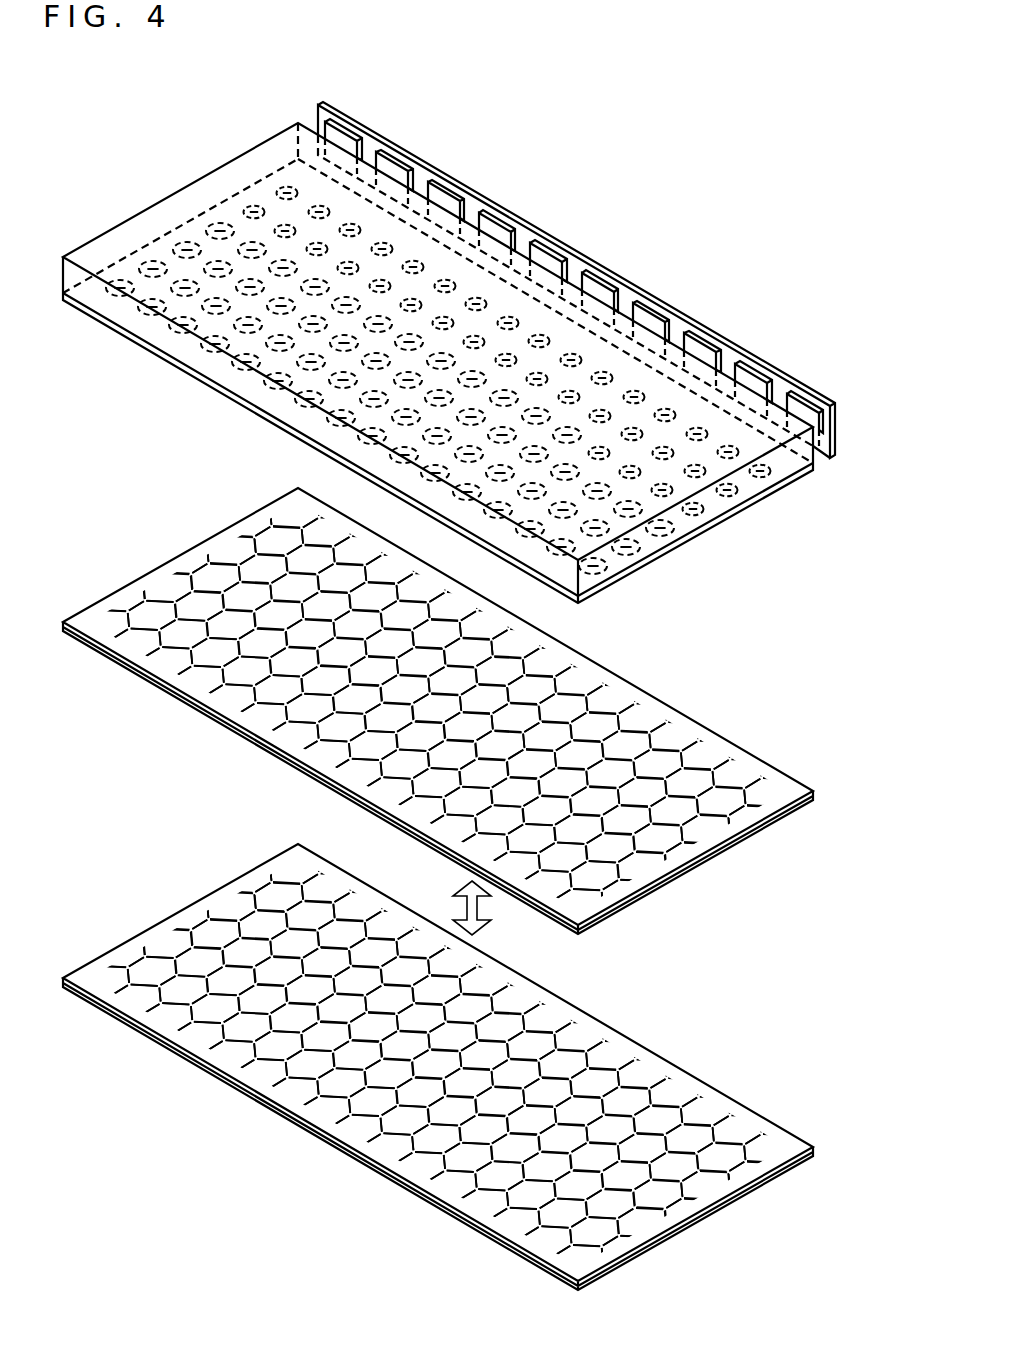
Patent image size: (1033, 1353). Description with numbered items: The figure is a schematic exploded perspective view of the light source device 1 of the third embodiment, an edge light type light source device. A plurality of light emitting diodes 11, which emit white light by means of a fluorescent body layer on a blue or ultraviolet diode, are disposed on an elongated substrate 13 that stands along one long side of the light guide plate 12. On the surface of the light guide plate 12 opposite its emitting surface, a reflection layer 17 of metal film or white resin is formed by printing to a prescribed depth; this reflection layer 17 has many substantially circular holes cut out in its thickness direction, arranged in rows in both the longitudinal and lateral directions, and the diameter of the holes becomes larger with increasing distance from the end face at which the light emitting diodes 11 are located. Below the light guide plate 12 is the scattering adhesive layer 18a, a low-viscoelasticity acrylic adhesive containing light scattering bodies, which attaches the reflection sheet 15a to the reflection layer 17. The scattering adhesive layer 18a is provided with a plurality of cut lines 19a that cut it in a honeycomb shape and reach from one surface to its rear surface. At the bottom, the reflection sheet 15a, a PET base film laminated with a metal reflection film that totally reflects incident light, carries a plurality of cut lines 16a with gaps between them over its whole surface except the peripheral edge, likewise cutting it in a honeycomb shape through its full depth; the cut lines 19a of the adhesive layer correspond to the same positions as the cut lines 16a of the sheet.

The light source device 1 is at (455, 346).
The light emitting diode 11 is at (805, 397).
The light guide plate 12 is at (140, 213).
The substrate 13 is at (829, 403).
The reflection layer 17 is at (188, 365).
The scattering adhesive layer 18a is at (453, 717).
The cut lines 19a is at (207, 567).
The reflection sheet 15a is at (453, 1073).
The cut lines 16a is at (190, 950).